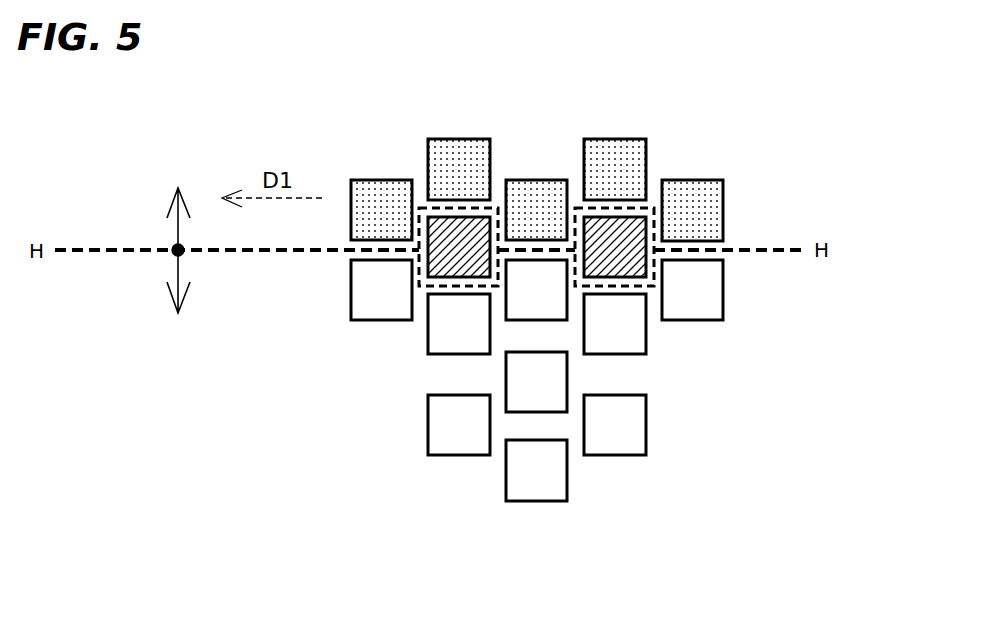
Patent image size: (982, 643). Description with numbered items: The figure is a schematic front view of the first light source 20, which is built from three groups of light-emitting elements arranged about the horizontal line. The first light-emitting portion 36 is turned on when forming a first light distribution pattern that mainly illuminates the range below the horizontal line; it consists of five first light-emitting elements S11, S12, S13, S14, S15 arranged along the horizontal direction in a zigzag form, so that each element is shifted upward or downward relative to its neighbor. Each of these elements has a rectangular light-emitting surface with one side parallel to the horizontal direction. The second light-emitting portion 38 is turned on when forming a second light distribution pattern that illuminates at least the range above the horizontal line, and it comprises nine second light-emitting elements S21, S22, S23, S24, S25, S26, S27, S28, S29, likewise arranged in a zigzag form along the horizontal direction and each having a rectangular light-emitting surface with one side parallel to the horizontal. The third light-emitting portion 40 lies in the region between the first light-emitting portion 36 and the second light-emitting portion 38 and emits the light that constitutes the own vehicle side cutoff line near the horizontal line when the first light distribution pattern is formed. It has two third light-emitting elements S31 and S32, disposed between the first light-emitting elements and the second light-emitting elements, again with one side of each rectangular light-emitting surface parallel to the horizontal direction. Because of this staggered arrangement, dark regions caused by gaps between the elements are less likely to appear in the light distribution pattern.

The first light source 20 is at (554, 637).
The first light-emitting portion 36 is at (752, 215).
The second light-emitting portion 38 is at (755, 295).
The third light-emitting portion 40 is at (650, 240).
The first light-emitting element S11 is at (697, 180).
The first light-emitting element S12 is at (617, 139).
The first light-emitting element S13 is at (538, 180).
The first light-emitting element S14 is at (462, 139).
The first light-emitting element S15 is at (377, 180).
The second light-emitting element S21 is at (723, 303).
The second light-emitting element S22 is at (646, 343).
The second light-emitting element S23 is at (538, 320).
The second light-emitting element S24 is at (428, 337).
The second light-emitting element S25 is at (351, 286).
The second light-emitting element S26 is at (628, 455).
The second light-emitting element S27 is at (506, 368).
The second light-emitting element S28 is at (457, 455).
The second light-emitting element S29 is at (537, 502).
The third light-emitting element S31 is at (622, 265).
The third light-emitting element S32 is at (457, 265).